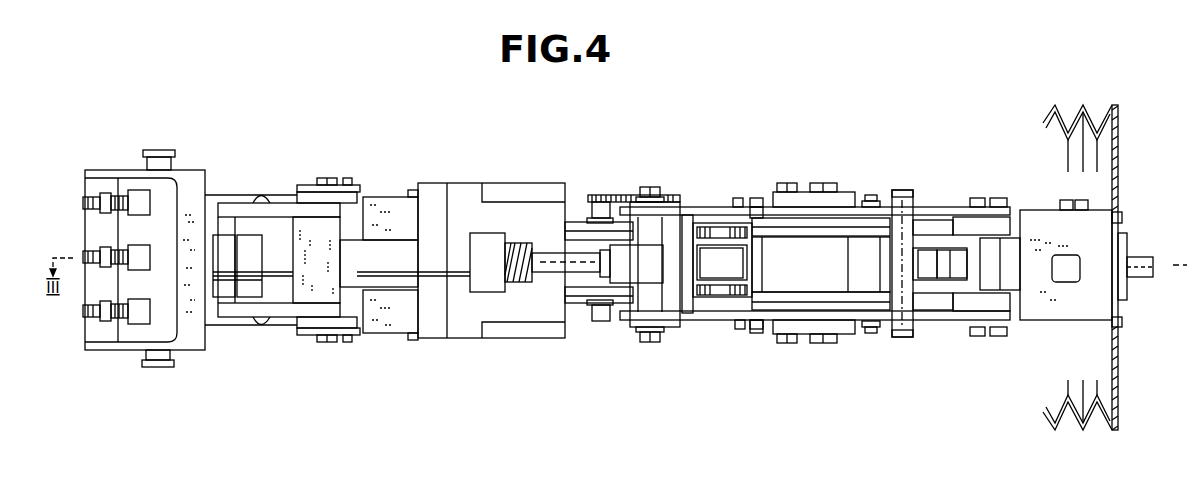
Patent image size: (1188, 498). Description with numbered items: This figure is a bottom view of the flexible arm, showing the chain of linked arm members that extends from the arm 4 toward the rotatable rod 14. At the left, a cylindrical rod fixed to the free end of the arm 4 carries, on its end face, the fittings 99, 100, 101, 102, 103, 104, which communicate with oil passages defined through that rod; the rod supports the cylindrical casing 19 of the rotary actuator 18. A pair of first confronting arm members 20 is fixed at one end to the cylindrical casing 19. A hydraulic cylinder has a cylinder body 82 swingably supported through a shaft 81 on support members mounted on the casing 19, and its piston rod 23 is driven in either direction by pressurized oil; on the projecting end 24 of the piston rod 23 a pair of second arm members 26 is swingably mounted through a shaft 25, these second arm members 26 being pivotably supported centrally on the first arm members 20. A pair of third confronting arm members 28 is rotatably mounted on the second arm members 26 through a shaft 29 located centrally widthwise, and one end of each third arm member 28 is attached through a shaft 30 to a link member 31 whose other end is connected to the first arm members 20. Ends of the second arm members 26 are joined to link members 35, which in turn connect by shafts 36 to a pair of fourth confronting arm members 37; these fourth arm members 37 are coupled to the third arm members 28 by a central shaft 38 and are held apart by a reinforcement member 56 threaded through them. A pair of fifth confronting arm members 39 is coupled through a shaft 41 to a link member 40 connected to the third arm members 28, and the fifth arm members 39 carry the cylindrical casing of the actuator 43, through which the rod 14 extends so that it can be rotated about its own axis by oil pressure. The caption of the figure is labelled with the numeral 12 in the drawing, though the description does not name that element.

The arm 4 is at (188, 176).
The hydraulic cylinder 12 is at (805, 188).
The rod 14 is at (1146, 262).
The rotary actuator 18 is at (509, 181).
The cylindrical casing 19 is at (539, 204).
The first confronting arm members 20 is at (573, 230).
The piston rod 23 is at (550, 265).
The projecting end 24 is at (658, 264).
The shaft 25 is at (657, 228).
The second arm members 26 is at (700, 209).
The third confronting arm members 28 is at (782, 228).
The shaft 29 is at (754, 222).
The shaft 30 is at (723, 241).
The link member 31 is at (730, 275).
The link member 35 is at (828, 199).
The shafts 36 is at (836, 189).
The fourth confronting arm members 37 is at (920, 212).
The shaft 38 is at (870, 196).
The fifth confronting arm members 39 is at (977, 230).
The link member 40 is at (927, 273).
The shaft 41 is at (944, 282).
The actuator 43 is at (1051, 202).
The reinforcement member 56 is at (903, 198).
The shaft 81 is at (329, 178).
The cylinder body 82 is at (392, 275).
The fitting 99 is at (95, 211).
The fitting 100 is at (129, 211).
The fitting 101 is at (94, 262).
The fitting 102 is at (128, 271).
The fitting 103 is at (90, 322).
The fitting 104 is at (113, 324).